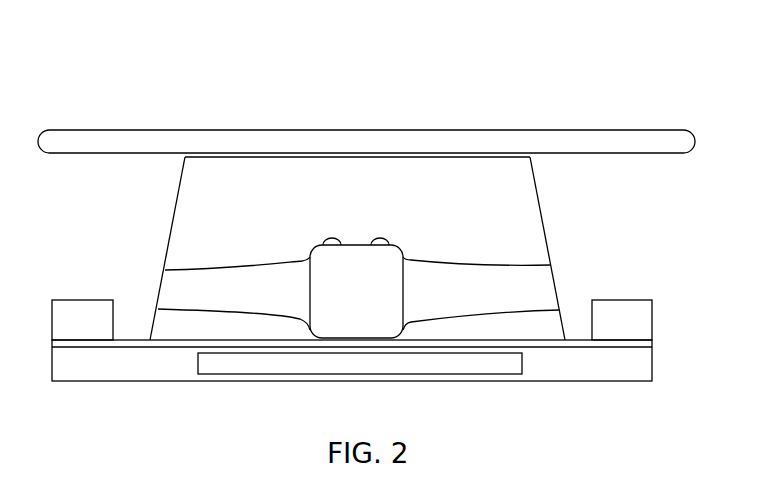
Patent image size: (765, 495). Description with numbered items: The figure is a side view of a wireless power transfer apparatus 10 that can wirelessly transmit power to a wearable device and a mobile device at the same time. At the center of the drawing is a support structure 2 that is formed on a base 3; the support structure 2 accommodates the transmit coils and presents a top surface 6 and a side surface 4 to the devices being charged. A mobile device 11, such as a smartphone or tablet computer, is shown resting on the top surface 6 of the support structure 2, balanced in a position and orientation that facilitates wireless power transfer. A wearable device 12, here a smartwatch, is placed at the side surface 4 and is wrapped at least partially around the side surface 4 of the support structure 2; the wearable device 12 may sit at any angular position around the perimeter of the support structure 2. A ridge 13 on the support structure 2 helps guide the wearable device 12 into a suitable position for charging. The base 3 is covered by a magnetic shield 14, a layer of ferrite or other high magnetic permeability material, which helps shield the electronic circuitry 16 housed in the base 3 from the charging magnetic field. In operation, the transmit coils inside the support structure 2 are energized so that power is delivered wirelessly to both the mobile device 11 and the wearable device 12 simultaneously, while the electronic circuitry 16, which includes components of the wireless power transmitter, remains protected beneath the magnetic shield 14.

The wireless power transfer apparatus 10 is at (155, 83).
The mobile device 11 is at (600, 128).
The support structure 2 is at (535, 192).
The top surface 6 is at (375, 157).
The side surface 4 is at (548, 250).
The wearable device 12 is at (256, 266).
The ridge 13 is at (86, 312).
The base 3 is at (640, 366).
The magnetic shield 14 is at (576, 348).
The electronic circuitry 16 is at (415, 370).